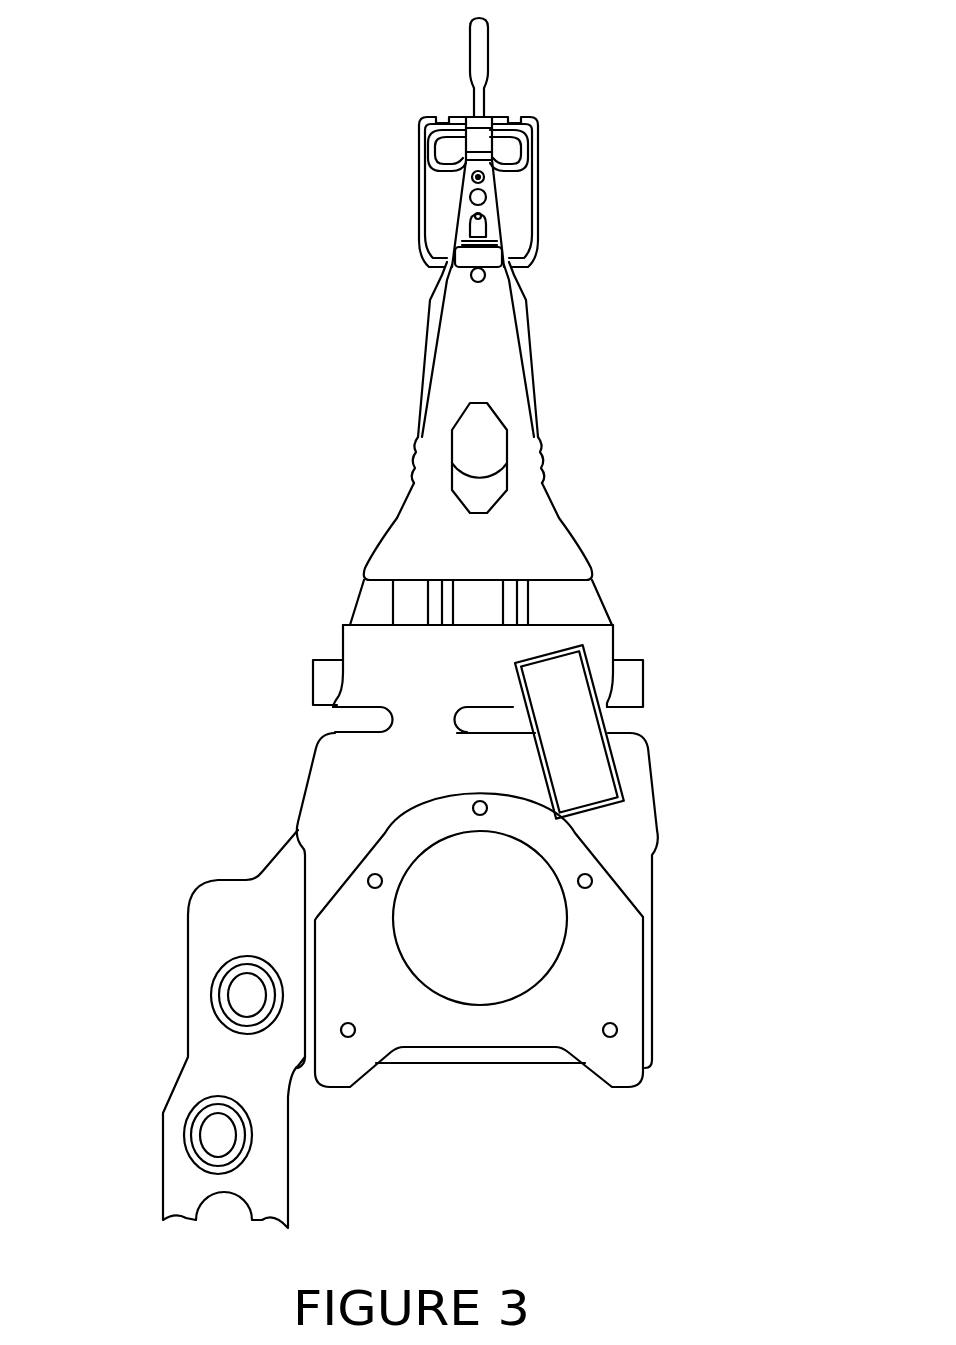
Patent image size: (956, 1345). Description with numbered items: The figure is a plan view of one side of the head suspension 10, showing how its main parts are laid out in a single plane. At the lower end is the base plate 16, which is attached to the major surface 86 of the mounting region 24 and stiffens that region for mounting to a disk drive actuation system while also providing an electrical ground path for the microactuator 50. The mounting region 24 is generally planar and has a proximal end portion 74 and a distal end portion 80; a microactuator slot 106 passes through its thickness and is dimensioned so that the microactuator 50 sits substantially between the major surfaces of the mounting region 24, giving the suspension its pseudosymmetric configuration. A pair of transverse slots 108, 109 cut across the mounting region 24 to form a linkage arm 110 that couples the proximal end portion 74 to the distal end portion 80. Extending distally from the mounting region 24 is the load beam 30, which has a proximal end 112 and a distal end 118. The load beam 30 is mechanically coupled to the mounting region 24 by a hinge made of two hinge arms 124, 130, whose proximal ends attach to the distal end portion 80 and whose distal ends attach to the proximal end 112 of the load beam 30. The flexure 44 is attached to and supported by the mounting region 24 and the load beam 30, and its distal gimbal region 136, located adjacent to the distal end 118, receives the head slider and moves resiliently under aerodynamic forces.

The head suspension 10 is at (136, 1007).
The base plate 16 is at (615, 1065).
The mounting region 24 is at (303, 770).
The load beam 30 is at (408, 486).
The flexure 44 is at (538, 332).
The microactuator 50 is at (600, 755).
The proximal end portion 74 is at (653, 1022).
The distal end portion 80 is at (343, 632).
The major surface 86 is at (350, 795).
The microactuator slot 106 is at (615, 723).
The transverse slot 108 is at (327, 720).
The transverse slot 109 is at (483, 720).
The linkage arm 110 is at (413, 693).
The proximal end 112 is at (598, 547).
The distal end 118 is at (465, 117).
The hinge arm 124 is at (353, 583).
The hinge arm 130 is at (607, 590).
The gimbal region 136 is at (503, 197).